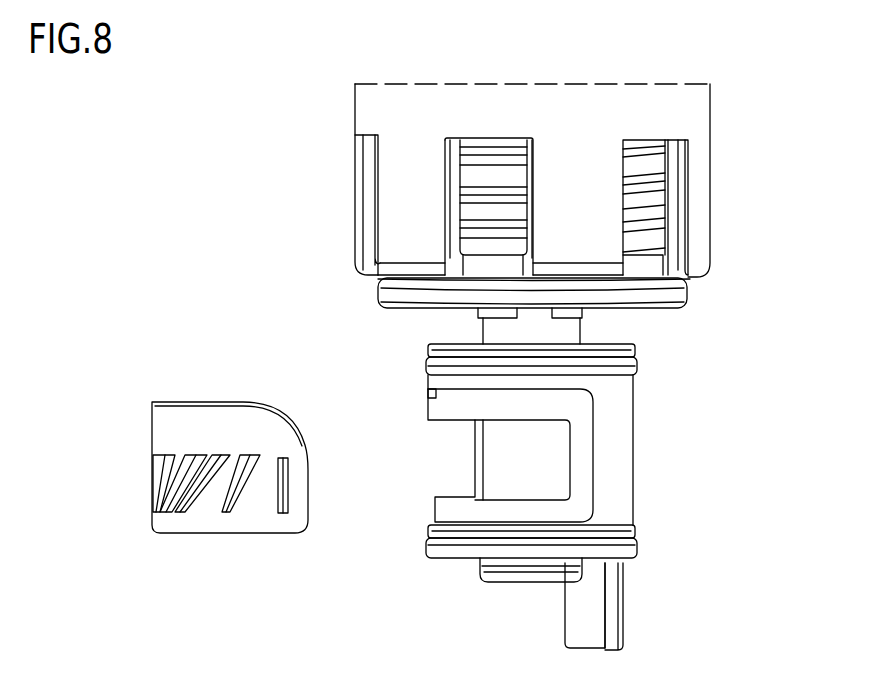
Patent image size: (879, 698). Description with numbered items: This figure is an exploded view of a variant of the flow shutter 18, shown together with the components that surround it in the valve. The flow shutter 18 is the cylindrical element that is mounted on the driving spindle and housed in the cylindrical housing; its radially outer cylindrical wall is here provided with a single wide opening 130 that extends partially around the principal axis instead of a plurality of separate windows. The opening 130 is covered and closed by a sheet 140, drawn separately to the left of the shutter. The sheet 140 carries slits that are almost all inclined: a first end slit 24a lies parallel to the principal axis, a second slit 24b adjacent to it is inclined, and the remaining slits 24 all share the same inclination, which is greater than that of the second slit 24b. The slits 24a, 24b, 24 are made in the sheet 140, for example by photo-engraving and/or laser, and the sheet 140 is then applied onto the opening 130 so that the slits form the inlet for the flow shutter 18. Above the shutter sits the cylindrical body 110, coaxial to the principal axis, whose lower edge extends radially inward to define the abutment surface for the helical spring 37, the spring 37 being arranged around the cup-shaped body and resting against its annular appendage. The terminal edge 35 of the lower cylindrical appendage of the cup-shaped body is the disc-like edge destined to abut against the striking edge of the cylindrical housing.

The cylindrical body 110 is at (587, 182).
The helical spring 37 is at (650, 220).
The terminal edge 35 is at (670, 307).
The flow shutter 18 is at (577, 497).
The opening 130 is at (526, 422).
The sheet 140 is at (255, 488).
The slits 24 is at (222, 458).
The second slit 24b is at (245, 462).
The first end slit 24a is at (284, 485).